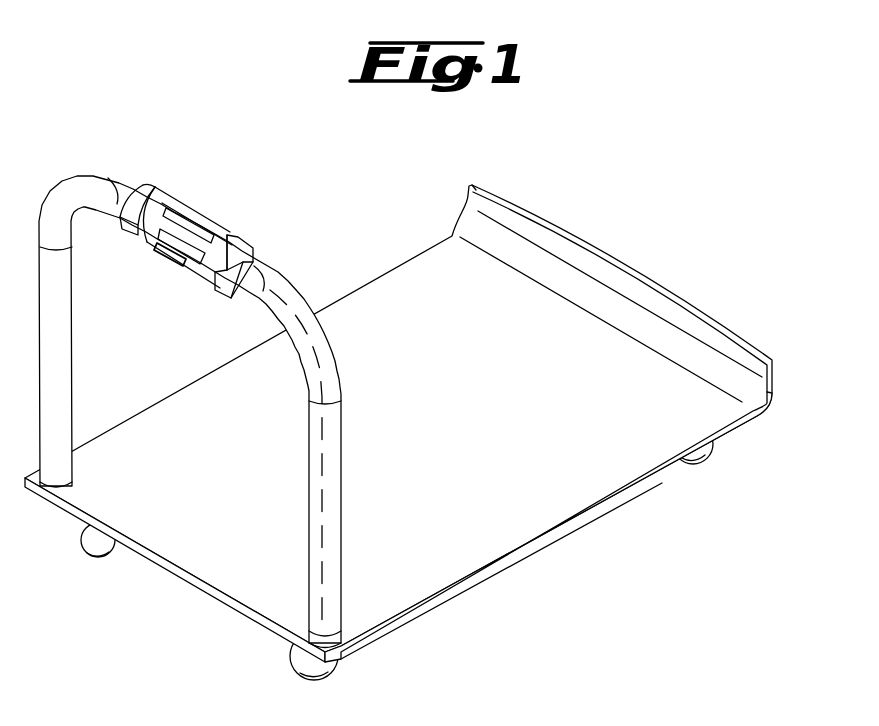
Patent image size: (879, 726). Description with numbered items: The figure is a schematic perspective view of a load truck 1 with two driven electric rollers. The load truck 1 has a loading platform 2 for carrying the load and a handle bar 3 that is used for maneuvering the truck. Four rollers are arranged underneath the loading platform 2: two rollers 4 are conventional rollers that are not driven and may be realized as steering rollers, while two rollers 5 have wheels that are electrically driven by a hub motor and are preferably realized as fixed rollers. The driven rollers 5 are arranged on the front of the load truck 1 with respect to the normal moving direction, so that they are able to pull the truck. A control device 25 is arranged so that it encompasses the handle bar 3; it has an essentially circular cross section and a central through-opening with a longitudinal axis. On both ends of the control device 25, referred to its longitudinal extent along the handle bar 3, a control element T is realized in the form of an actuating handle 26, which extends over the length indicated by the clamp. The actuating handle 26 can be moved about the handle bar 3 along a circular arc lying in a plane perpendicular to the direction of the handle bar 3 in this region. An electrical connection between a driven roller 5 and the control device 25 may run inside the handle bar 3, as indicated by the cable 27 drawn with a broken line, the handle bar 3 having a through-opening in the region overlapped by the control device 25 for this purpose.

The load truck 1 is at (435, 372).
The loading platform 2 is at (468, 423).
The handle bar 3 is at (116, 200).
The rollers 4 is at (97, 548).
The rollers 5 is at (688, 463).
The control device 25 is at (212, 208).
The actuating handle 26 is at (153, 188).
The cable 27 is at (343, 337).
The control element T is at (137, 172).